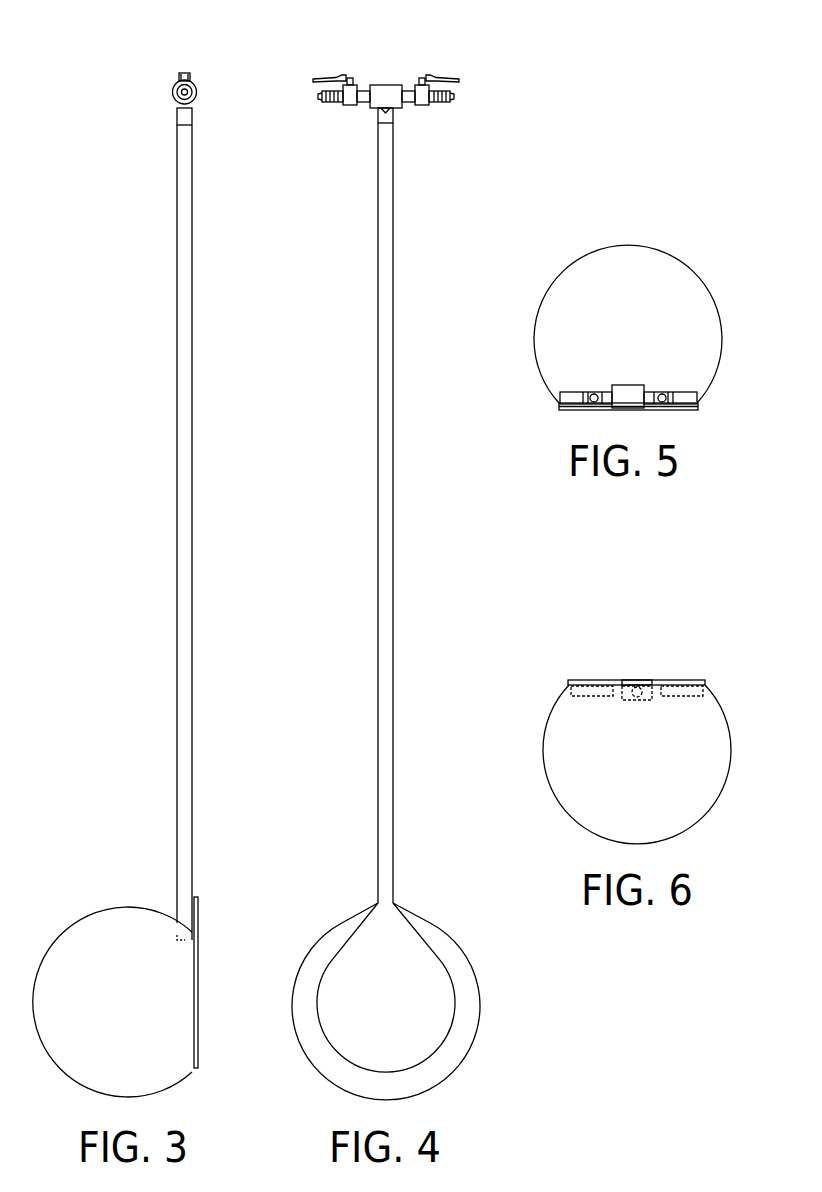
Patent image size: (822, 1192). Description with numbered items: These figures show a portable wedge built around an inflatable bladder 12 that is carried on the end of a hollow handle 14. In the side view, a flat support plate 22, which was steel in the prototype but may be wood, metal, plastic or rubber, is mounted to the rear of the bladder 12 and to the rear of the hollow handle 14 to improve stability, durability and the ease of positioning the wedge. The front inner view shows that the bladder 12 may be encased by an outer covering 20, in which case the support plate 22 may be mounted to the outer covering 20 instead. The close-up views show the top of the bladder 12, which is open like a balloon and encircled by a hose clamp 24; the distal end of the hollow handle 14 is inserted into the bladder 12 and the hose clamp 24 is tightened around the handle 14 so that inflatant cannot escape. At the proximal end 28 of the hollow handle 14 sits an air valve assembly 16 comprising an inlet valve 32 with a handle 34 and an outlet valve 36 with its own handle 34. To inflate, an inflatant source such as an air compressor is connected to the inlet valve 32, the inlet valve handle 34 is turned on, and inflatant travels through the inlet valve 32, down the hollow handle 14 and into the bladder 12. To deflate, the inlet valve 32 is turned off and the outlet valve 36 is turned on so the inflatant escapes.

In FIG. 4, the inflatable bladder 12 is at (393, 972).
In FIG. 5, the inflatable bladder 12 is at (681, 305).
In FIG. 6, the inflatable bladder 12 is at (692, 773).
In FIG. 3, the hollow handle 14 is at (183, 458).
In FIG. 4, the hollow handle 14 is at (385, 445).
In FIG. 4, the air valve assembly 16 is at (333, 70).
In FIG. 4, the outer covering 20 is at (453, 1046).
In FIG. 3, the flat support plate 22 is at (191, 985).
In FIG. 5, the hose clamp 24 is at (700, 404).
In FIG. 6, the hose clamp 24 is at (705, 682).
In FIG. 4, the proximal end 28 is at (388, 120).
In FIG. 4, the inlet valve 32 is at (457, 96).
In FIG. 4, the handle 34 is at (313, 75).
In FIG. 4, the outlet valve 36 is at (316, 96).